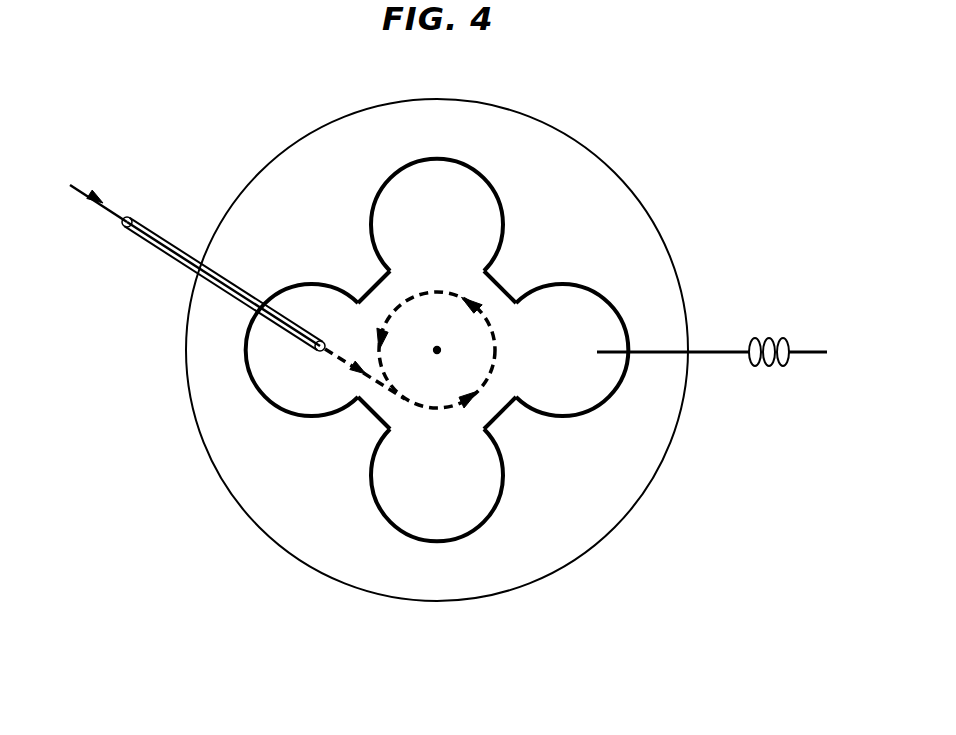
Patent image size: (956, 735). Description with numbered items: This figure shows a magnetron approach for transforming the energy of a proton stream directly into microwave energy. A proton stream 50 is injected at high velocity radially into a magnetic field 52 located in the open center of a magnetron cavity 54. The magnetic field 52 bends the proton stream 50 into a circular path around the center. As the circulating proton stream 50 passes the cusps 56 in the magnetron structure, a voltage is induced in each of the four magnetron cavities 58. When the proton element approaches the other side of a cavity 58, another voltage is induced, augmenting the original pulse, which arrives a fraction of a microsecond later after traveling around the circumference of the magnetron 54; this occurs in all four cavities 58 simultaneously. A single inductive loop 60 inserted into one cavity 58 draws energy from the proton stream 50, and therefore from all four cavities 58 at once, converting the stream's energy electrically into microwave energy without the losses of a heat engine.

The proton stream 50 is at (80, 194).
The magnetic field 52 is at (437, 347).
The magnetron cavity 54 is at (424, 350).
The cusps 56 is at (369, 288).
The magnetron cavities 58 is at (423, 236).
The inductive loop 60 is at (771, 336).